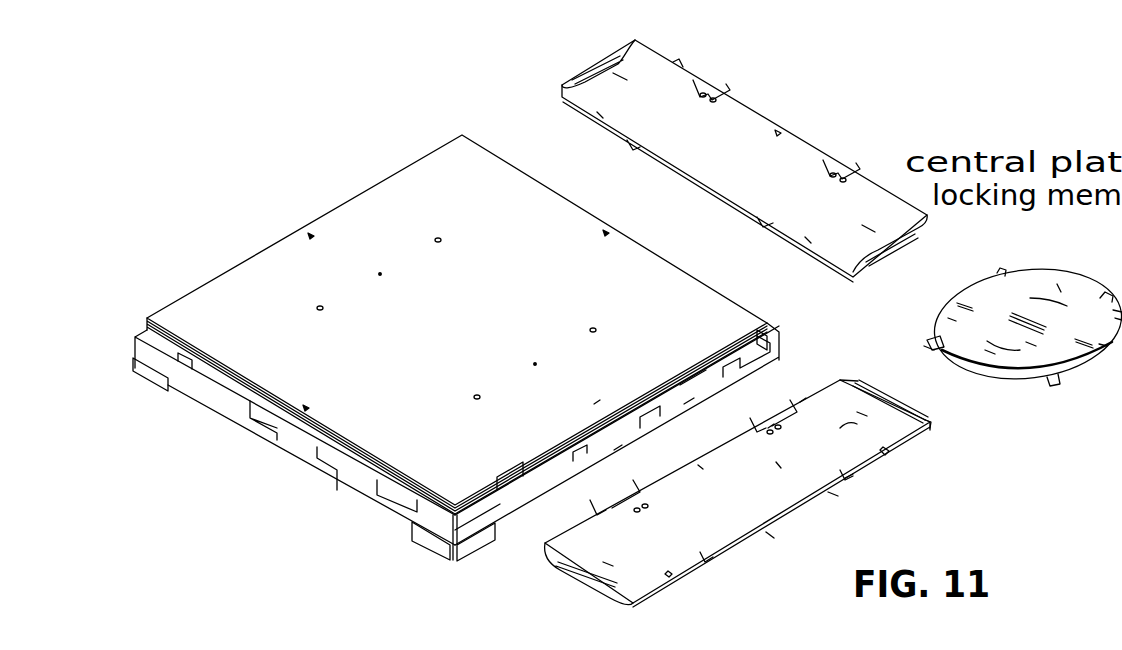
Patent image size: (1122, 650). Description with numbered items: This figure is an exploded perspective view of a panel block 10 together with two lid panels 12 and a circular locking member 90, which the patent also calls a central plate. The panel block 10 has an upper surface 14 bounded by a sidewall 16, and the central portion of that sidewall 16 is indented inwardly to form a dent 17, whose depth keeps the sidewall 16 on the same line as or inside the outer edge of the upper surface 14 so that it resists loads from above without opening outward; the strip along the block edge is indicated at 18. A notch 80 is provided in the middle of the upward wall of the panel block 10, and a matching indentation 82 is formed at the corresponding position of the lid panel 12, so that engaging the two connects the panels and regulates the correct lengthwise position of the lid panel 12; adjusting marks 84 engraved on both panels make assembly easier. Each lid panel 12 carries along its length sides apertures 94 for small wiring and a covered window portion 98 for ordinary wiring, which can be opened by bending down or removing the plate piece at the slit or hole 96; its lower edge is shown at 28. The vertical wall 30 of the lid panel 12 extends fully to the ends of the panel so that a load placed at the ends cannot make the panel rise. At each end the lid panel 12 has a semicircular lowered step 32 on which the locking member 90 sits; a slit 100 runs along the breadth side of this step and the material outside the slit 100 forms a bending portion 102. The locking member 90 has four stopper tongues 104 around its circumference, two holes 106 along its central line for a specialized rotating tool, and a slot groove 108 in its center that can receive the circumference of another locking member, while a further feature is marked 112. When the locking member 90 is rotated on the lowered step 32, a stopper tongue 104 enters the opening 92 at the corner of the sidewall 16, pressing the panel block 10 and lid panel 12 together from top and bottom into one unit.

The panel block 10 is at (640, 254).
The lid panel 12 is at (920, 445).
The upper surface 14 is at (687, 284).
The sidewall 16 is at (689, 405).
The dent 17 is at (618, 448).
The frame member 18 is at (693, 378).
The rail edge 28 is at (770, 535).
The vertical wall 30 is at (833, 494).
The lowered step 32 is at (858, 380).
The notch 80 is at (720, 350).
The indentation 82 is at (803, 400).
The adjusting marks 84 is at (597, 404).
The locking member 90 is at (1081, 285).
The opening 92 is at (765, 328).
The apertures 94 is at (850, 483).
The slit or hole 96 is at (792, 463).
The covered window portion 98 is at (770, 426).
The slit 100 is at (890, 390).
The bending portion 102 is at (912, 404).
The stopper tongues 104 is at (928, 348).
The holes 106 is at (952, 318).
The slot groove 108 is at (1030, 345).
The slot 112 is at (990, 352).